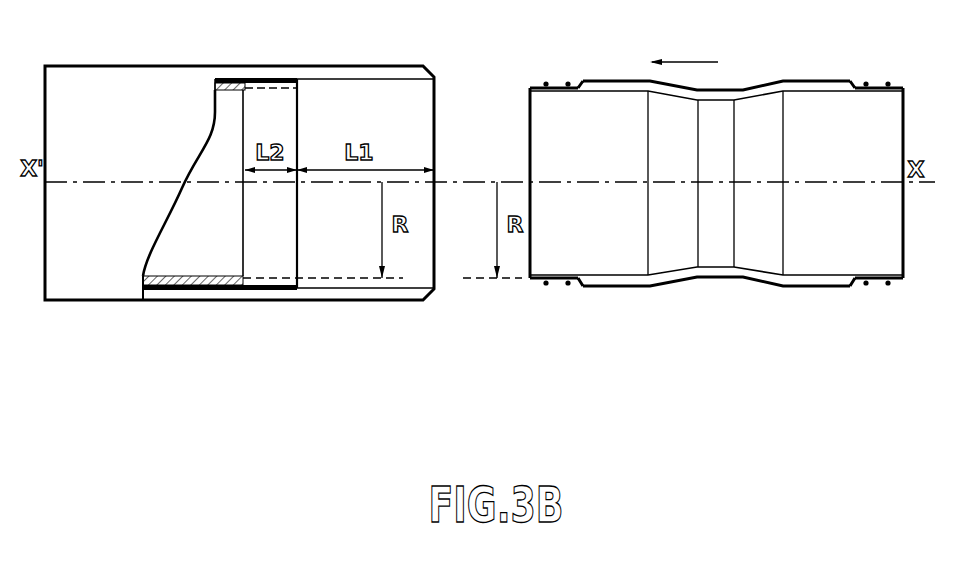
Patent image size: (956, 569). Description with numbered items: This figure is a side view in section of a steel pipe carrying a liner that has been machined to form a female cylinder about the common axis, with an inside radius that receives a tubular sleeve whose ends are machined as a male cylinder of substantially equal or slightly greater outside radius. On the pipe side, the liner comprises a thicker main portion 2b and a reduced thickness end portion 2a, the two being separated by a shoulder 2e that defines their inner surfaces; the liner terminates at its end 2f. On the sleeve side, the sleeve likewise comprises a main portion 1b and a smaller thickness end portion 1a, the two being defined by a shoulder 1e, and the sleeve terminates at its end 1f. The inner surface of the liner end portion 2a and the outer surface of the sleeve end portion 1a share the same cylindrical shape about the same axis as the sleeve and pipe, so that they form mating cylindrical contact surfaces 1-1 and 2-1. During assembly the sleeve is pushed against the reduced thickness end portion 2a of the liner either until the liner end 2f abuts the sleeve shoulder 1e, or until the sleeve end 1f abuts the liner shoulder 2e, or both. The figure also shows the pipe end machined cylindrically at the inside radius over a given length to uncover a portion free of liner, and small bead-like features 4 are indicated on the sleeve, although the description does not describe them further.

The smaller thickness end portion of the sleeve 1a is at (567, 92).
The main portion of the sleeve 1b is at (622, 82).
The shoulder of the sleeve 1e is at (577, 82).
The end of the sleeve 1f is at (530, 88).
The cylindrical contact surface of the sleeve 1-1 is at (555, 82).
The smaller thickness end portion of the liner 2a is at (282, 79).
The main portion of the liner 2b is at (182, 275).
The shoulder of the liner 2e is at (247, 93).
The end of the liner 2f is at (298, 82).
The cylindrical contact surface of the liner 2-1 is at (277, 87).
The bead portions 4 is at (546, 285).